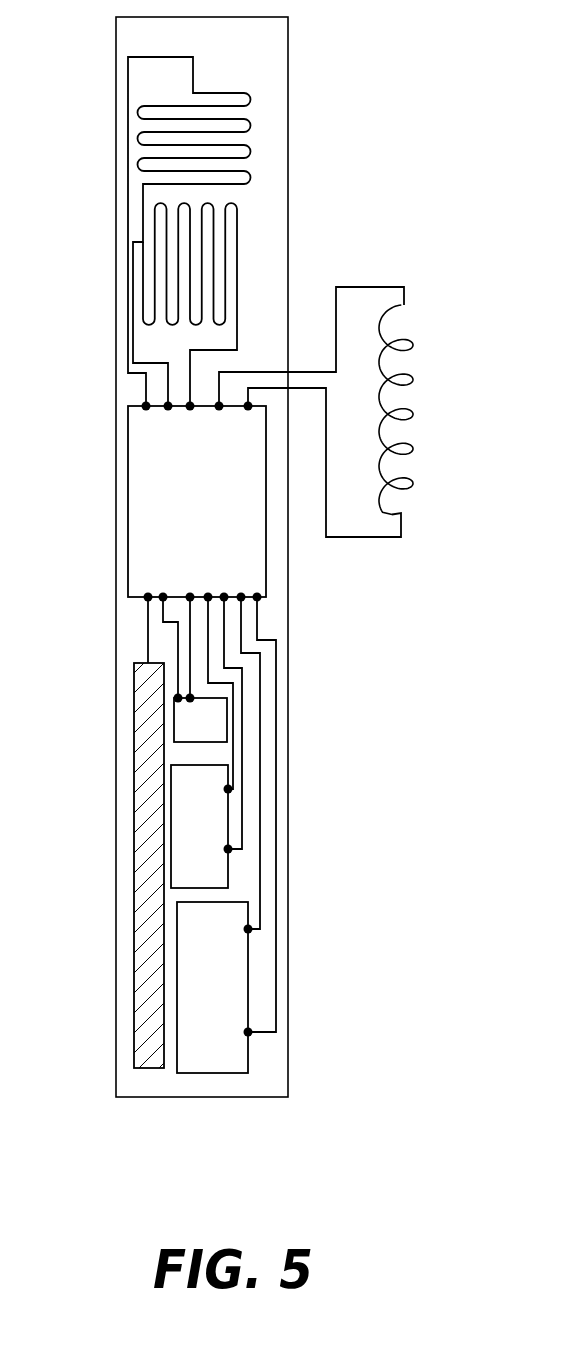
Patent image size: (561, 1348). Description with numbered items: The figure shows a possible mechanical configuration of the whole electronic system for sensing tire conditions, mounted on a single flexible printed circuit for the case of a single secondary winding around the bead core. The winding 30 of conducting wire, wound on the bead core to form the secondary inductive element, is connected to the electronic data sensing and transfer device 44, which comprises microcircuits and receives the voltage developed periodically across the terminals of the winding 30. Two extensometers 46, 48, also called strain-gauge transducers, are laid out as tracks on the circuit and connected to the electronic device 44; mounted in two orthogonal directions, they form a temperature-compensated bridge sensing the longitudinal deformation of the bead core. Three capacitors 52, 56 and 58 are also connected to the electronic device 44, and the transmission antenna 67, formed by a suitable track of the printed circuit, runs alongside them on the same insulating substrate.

The winding 30 is at (405, 385).
The electronic data sensing and transfer device 44 is at (182, 508).
The extensometer 46 is at (228, 93).
The extensometer 48 is at (237, 273).
The capacitor 52 is at (203, 999).
The capacitor 56 is at (184, 840).
The capacitor 58 is at (187, 734).
The transmission antenna 67 is at (147, 873).